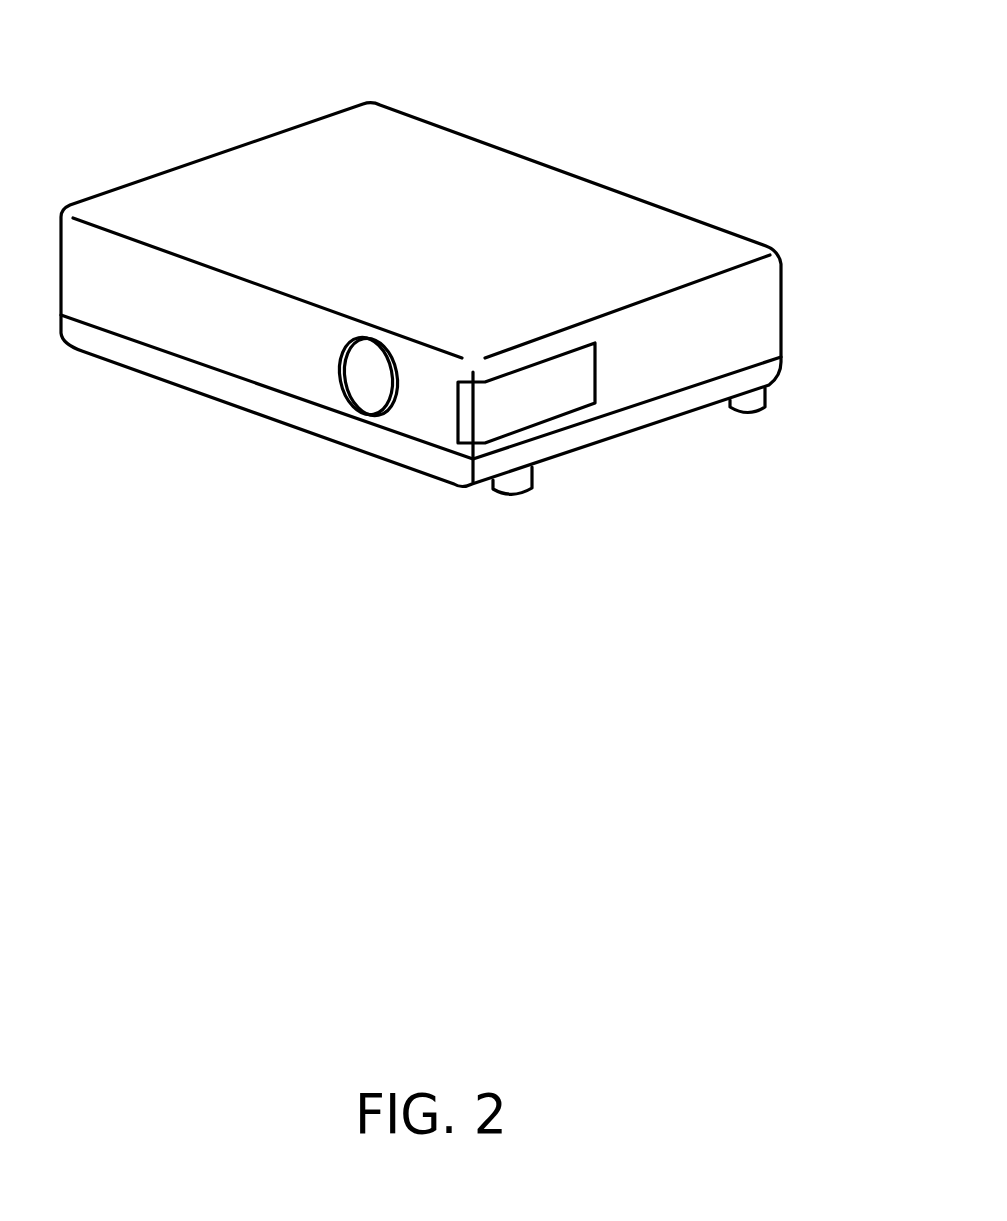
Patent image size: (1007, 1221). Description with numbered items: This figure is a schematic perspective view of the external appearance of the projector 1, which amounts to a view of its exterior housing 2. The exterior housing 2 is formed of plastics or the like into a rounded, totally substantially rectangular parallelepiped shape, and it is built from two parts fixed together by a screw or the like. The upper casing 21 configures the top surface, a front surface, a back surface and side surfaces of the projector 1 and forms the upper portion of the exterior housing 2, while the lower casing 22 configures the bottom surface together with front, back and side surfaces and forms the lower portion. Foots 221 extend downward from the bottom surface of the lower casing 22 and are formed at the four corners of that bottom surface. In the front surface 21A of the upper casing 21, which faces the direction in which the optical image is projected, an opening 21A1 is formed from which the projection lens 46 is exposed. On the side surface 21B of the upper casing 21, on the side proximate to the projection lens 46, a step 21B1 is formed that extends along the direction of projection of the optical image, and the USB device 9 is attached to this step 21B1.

The projector 1 is at (624, 90).
The exterior housing 2 is at (775, 248).
The upper casing 21 is at (650, 230).
The front surface 21A is at (238, 317).
The opening 21A1 is at (347, 400).
The side surface 21B is at (750, 314).
The step 21B1 is at (537, 363).
The lower casing 22 is at (632, 420).
The foots 221 is at (520, 483).
The projection lens 46 is at (373, 373).
The USB device 9 is at (492, 418).